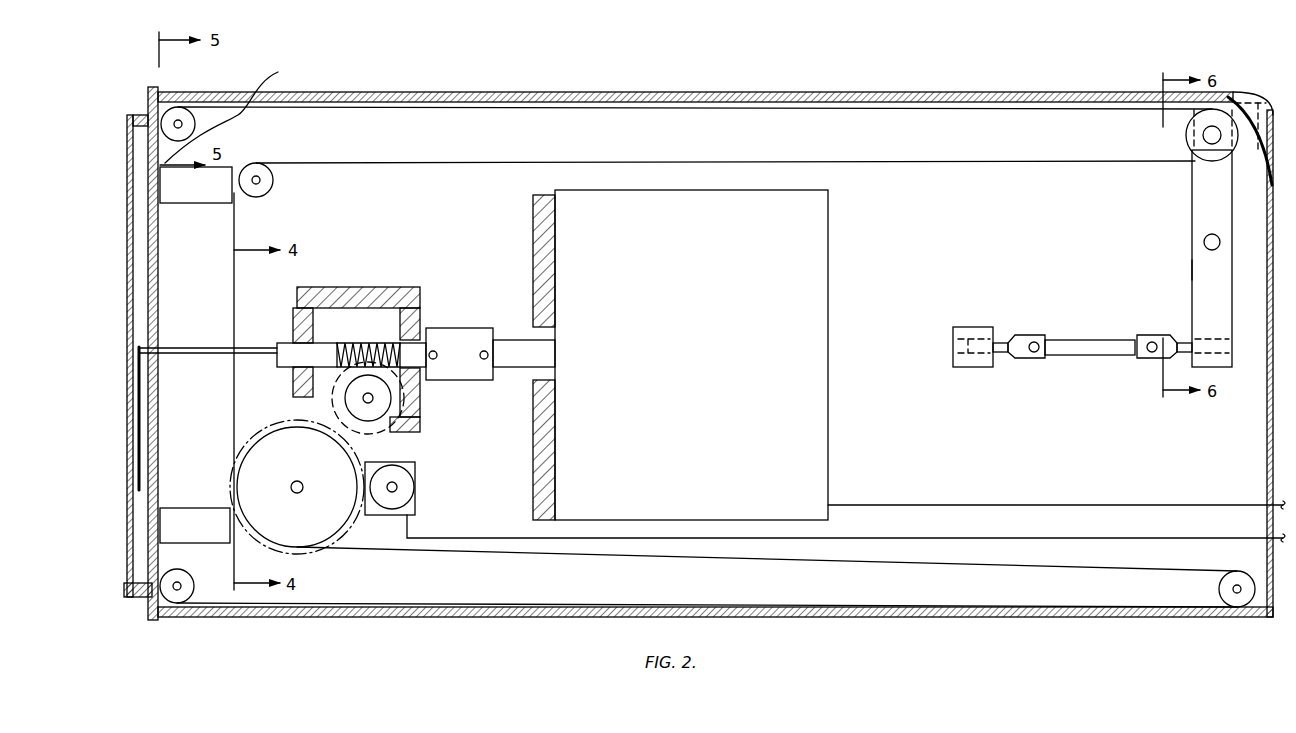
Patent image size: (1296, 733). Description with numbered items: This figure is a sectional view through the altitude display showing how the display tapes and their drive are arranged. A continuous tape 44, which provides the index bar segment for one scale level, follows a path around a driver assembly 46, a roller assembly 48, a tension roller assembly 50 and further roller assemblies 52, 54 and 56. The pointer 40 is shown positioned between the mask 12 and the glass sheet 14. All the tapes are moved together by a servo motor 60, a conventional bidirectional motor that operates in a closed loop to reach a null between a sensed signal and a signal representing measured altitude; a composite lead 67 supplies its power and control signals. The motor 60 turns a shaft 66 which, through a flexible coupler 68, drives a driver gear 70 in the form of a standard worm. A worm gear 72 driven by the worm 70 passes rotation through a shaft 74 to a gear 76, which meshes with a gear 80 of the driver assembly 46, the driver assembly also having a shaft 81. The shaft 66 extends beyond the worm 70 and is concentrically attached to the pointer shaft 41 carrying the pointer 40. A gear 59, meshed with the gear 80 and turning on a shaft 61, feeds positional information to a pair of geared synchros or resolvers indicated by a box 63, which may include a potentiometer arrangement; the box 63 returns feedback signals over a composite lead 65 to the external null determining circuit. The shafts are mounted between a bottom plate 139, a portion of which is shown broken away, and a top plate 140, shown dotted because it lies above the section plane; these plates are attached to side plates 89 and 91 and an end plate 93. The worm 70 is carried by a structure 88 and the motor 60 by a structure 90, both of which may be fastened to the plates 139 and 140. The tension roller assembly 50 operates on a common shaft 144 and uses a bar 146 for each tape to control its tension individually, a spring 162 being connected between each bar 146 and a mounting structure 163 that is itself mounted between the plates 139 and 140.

The mask 12 is at (150, 546).
The glass sheet 14 is at (127, 240).
The pointer 40 is at (138, 408).
The pointer shaft 41 is at (208, 350).
The tape 44 is at (456, 164).
The driver assembly 46 is at (262, 433).
The roller assembly 48 is at (274, 189).
The tension roller assembly 50 is at (1190, 200).
The roller assembly 52 is at (1219, 589).
The roller assembly 54 is at (190, 583).
The roller assembly 56 is at (200, 134).
The gear 59 is at (405, 501).
The servo motor 60 is at (677, 195).
The shaft 61 is at (392, 492).
The box 63 is at (418, 478).
The composite lead 65 is at (648, 538).
The shaft 66 is at (505, 345).
The composite lead 67 is at (912, 496).
The flexible coupler 68 is at (440, 330).
The driver gear 70 is at (360, 335).
The worm gear 72 is at (418, 406).
The shaft 74 is at (362, 398).
The gear 76 is at (425, 428).
The gear 80 is at (229, 454).
The shaft 81 is at (291, 487).
The structure 88 is at (405, 290).
The side plate 89 is at (570, 92).
The structure 90 is at (540, 230).
The side plate 91 is at (928, 617).
The end plate 93 is at (1265, 208).
The bottom plate 139 is at (239, 113).
The top plate 140 is at (1247, 148).
The common shaft 144 is at (1203, 242).
The bar 146 is at (1200, 268).
The spring 162 is at (1068, 358).
The mounting structure 163 is at (987, 304).